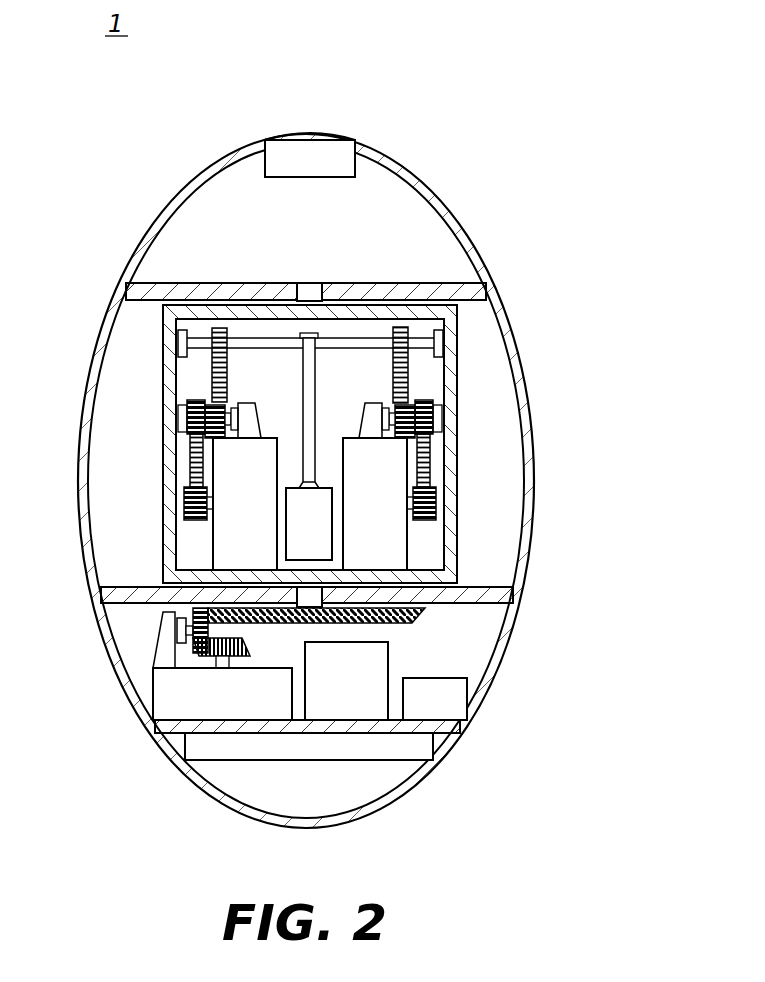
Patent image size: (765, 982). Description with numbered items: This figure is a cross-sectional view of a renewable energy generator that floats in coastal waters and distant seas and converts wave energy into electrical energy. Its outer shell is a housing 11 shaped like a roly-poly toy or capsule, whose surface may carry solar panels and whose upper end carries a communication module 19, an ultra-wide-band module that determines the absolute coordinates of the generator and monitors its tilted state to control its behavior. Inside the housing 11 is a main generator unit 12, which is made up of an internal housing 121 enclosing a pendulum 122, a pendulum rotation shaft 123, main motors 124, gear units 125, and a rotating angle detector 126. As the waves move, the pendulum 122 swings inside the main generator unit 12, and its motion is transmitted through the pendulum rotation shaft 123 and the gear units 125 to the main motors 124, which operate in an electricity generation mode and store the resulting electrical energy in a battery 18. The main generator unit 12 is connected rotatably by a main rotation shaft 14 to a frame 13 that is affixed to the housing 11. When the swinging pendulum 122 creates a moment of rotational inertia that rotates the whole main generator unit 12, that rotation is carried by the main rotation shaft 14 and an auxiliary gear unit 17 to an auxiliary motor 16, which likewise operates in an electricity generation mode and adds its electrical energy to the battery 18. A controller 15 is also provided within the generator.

The housing 11 is at (397, 162).
The main generator unit 12 is at (603, 287).
The internal housing 121 is at (452, 378).
The pendulum 122 is at (325, 545).
The pendulum rotation shaft 123 is at (443, 350).
The main motors 124 is at (400, 520).
The gear units 125 is at (438, 444).
The rotating angle detector 126 is at (425, 338).
The frame 13 is at (126, 291).
The main rotation shaft 14 is at (302, 600).
The controller 15 is at (470, 700).
The auxiliary motor 16 is at (152, 702).
The auxiliary gear unit 17 is at (398, 612).
The battery 18 is at (440, 748).
The communication module 19 is at (321, 147).